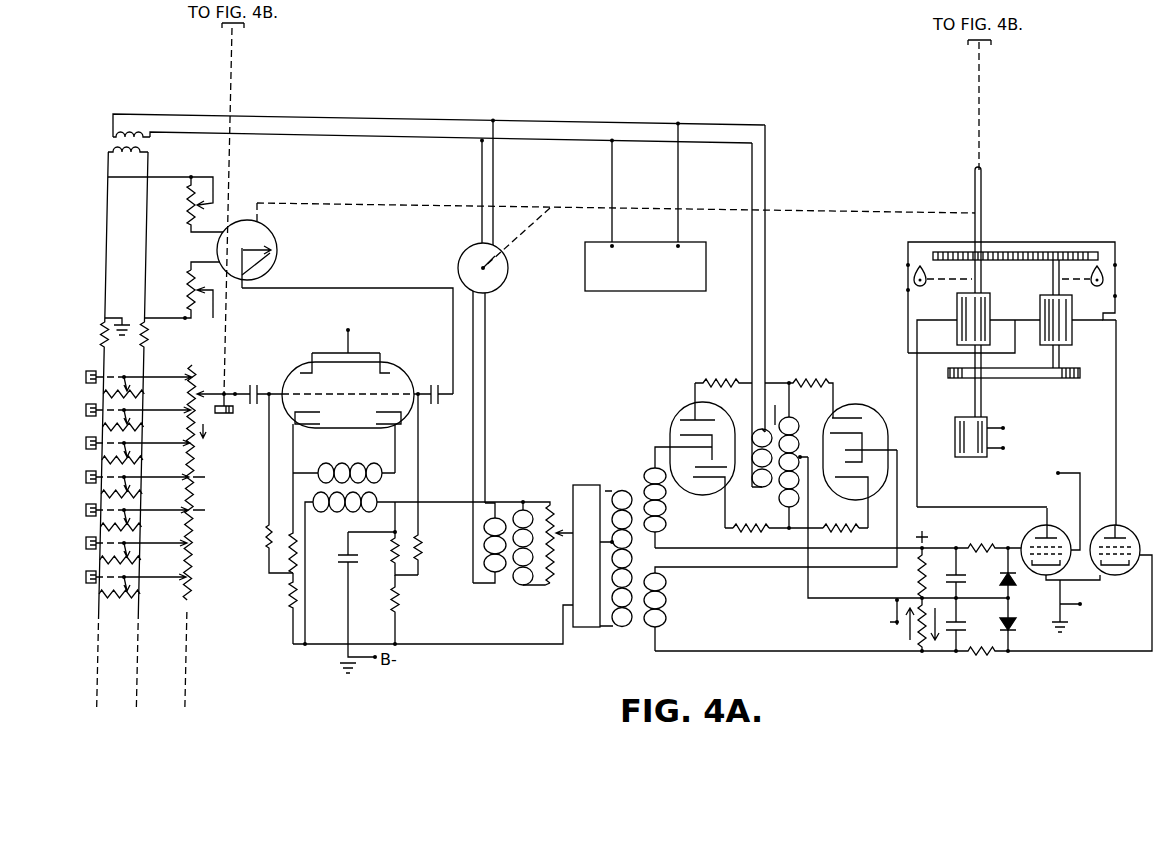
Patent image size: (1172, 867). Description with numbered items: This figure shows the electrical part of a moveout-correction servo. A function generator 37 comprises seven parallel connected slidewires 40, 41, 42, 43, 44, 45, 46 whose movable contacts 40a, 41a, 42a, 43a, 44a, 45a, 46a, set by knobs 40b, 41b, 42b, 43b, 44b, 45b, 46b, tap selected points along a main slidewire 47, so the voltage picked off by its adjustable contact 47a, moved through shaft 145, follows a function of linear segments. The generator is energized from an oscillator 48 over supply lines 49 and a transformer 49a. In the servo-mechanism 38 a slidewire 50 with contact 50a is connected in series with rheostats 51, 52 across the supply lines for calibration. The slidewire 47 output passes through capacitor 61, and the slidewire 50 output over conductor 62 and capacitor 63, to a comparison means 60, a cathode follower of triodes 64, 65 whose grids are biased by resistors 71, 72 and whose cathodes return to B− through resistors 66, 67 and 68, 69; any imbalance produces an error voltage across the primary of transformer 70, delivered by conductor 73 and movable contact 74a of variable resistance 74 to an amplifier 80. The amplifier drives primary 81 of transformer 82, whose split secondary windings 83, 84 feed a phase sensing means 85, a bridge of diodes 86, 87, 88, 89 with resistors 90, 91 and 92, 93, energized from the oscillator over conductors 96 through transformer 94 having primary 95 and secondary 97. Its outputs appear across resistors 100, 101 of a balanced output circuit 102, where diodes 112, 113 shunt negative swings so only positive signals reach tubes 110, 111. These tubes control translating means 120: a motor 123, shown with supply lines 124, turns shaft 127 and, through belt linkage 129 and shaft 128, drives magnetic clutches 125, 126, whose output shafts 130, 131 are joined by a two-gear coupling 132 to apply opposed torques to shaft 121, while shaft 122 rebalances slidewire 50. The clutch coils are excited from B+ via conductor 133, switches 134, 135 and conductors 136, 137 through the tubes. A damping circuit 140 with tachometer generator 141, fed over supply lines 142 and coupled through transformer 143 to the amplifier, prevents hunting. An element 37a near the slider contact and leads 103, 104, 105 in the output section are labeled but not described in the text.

The function generator 37 is at (94, 319).
The contact 37a is at (226, 414).
The servo-mechanism 38 is at (640, 322).
The slidewire 40 is at (103, 392).
The movable contact 40a is at (127, 382).
The knob 40b is at (86, 376).
The slidewire 41 is at (103, 425).
The movable contact 41a is at (140, 423).
The knob 41b is at (86, 409).
The slidewire 42 is at (102, 458).
The movable contact 42a is at (140, 456).
The knob 42b is at (86, 442).
The slidewire 43 is at (101, 492).
The movable contact 43a is at (140, 490).
The knob 43b is at (86, 476).
The slidewire 44 is at (100, 525).
The movable contact 44a is at (140, 523).
The knob 44b is at (86, 509).
The slidewire 45 is at (100, 558).
The movable contact 45a is at (140, 556).
The knob 45b is at (86, 542).
The slidewire 46 is at (99, 592).
The movable contact 46a is at (140, 590).
The knob 46b is at (86, 576).
The main slidewire 47 is at (197, 531).
The adjustable contact 47a is at (217, 389).
The oscillator 48 is at (585, 283).
The supply lines 49 is at (375, 124).
The transformer 49a is at (108, 147).
The slidewire 50 is at (263, 236).
The contact 50a is at (267, 262).
The rheostat 51 is at (186, 205).
The rheostat 52 is at (186, 293).
The comparison means 60 is at (330, 347).
The capacitor 61 is at (252, 390).
The conductor 62 is at (343, 290).
The capacitor 63 is at (436, 388).
The triode 64 is at (322, 393).
The triode 65 is at (372, 402).
The resistor 66 is at (288, 548).
The resistor 67 is at (290, 595).
The resistor 68 is at (398, 560).
The resistor 69 is at (400, 602).
The transformer 70 is at (342, 470).
The resistor 71 is at (265, 538).
The resistor 72 is at (422, 557).
The conductor 73 is at (493, 503).
The variable resistance 74 is at (548, 584).
The movable contact 74a is at (565, 530).
The amplifier 80 is at (591, 490).
The primary 81 is at (622, 630).
The transformer 82 is at (640, 495).
The secondary winding 83 is at (664, 517).
The secondary winding 84 is at (663, 594).
The phase sensing means 85 is at (795, 372).
The diode 86 is at (688, 410).
The diode 87 is at (705, 493).
The diode 88 is at (872, 492).
The diode 89 is at (867, 417).
The resistor 90 is at (722, 382).
The resistor 91 is at (817, 378).
The resistor 92 is at (762, 527).
The resistor 93 is at (833, 525).
The transformer 94 is at (777, 406).
The primary 95 is at (762, 469).
The conductors 96 is at (750, 280).
The secondary 97 is at (798, 425).
The resistor 100 is at (914, 575).
The resistor 101 is at (910, 628).
The balanced output circuit 102 is at (1155, 519).
The output line 103 is at (897, 518).
The output line 104 is at (752, 645).
The bias line 105 is at (808, 585).
The tube 110 is at (1034, 534).
The tube 111 is at (1132, 542).
The diode 112 is at (1013, 586).
The diode 113 is at (1013, 631).
The translating means 120 is at (1029, 309).
The shaft 121 is at (973, 184).
The shaft 122 is at (855, 212).
The motor 123 is at (962, 452).
The supply lines 124 is at (1005, 447).
The magnetic clutch 125 is at (958, 333).
The magnetic clutch 126 is at (1064, 338).
The shaft 127 is at (982, 401).
The shaft 128 is at (1061, 358).
The belt driven linkage 129 is at (1038, 380).
The output shaft 130 is at (990, 275).
The output shaft 131 is at (1061, 283).
The coupling means 132 is at (1050, 237).
The conductor 133 is at (1117, 307).
The switch 134 is at (1116, 278).
The switch 135 is at (904, 276).
The conductor 136 is at (917, 399).
The conductor 137 is at (1117, 400).
The damping circuit 140 is at (527, 386).
The tachometer generator 141 is at (458, 262).
The supply lines 142 is at (482, 160).
The transformer 143 is at (492, 586).
The shaft 145 is at (237, 73).